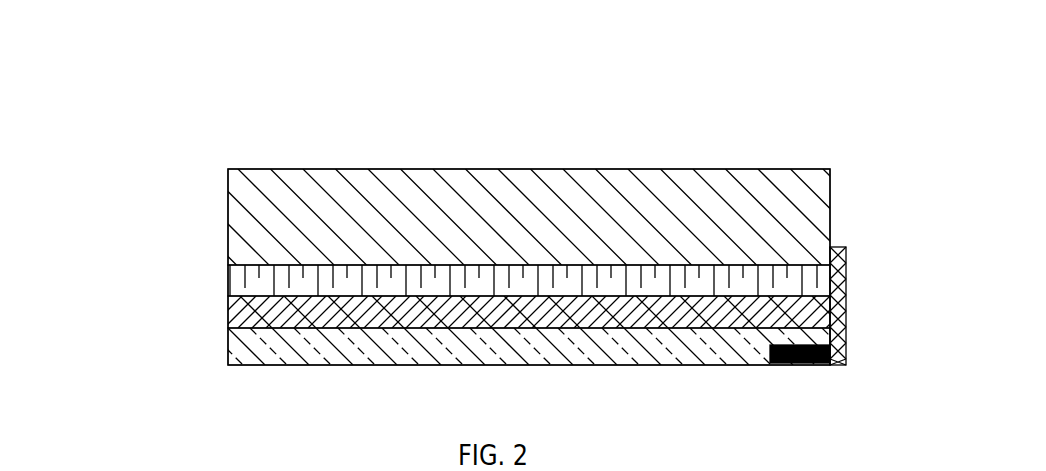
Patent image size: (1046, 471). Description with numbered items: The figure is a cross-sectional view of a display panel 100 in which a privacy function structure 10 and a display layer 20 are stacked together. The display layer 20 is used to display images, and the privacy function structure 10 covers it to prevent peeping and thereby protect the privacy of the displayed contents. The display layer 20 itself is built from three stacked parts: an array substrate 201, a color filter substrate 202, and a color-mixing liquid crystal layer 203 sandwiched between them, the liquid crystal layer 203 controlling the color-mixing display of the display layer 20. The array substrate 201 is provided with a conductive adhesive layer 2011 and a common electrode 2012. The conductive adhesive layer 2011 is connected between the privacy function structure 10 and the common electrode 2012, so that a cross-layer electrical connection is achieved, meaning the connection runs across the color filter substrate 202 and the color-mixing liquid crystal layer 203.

The display panel 100 is at (512, 110).
The privacy function structure 10 is at (228, 213).
The display layer 20 is at (112, 255).
The color filter substrate 202 is at (228, 275).
The color-mixing liquid crystal layer 203 is at (228, 318).
The array substrate 201 is at (228, 360).
The conductive adhesive layer 2011 is at (846, 322).
The common electrode 2012 is at (825, 363).